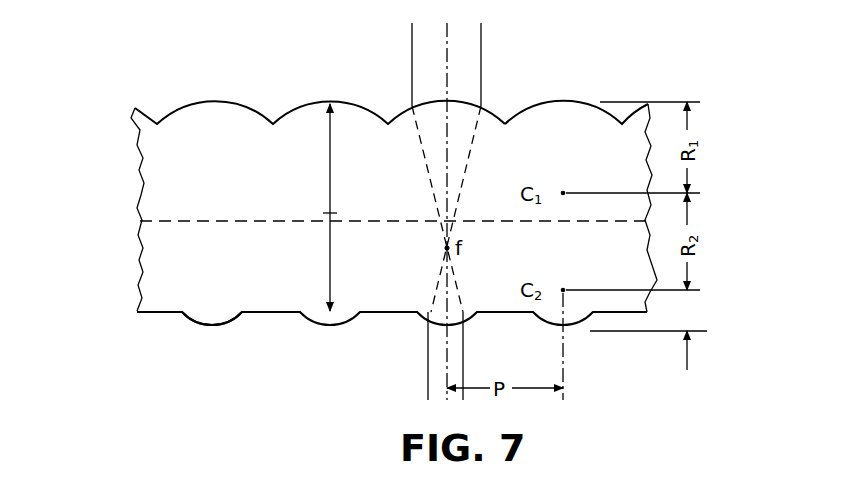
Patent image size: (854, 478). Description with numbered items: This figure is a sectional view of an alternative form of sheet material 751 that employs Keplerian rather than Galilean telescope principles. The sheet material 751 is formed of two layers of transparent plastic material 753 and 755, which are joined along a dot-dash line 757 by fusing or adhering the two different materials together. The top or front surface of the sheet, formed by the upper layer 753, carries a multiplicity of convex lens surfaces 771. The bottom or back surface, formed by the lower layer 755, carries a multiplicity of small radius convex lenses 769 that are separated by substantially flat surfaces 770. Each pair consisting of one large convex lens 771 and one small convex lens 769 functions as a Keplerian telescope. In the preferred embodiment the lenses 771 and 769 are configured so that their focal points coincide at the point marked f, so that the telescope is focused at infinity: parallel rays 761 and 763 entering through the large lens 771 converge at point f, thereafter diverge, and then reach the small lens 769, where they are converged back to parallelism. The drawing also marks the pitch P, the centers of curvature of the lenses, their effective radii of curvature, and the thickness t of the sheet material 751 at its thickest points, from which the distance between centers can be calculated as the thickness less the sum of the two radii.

The sheet material 751 is at (216, 96).
The layer of transparent plastic material 753 is at (142, 188).
The layer of transparent plastic material 755 is at (140, 280).
The dot-dash line 757 is at (394, 214).
The parallel ray 761 is at (412, 68).
The parallel ray 763 is at (481, 40).
The small radius convex lens 769 is at (187, 322).
The substantially flat surface 770 is at (253, 314).
The convex lens surface 771 is at (574, 100).